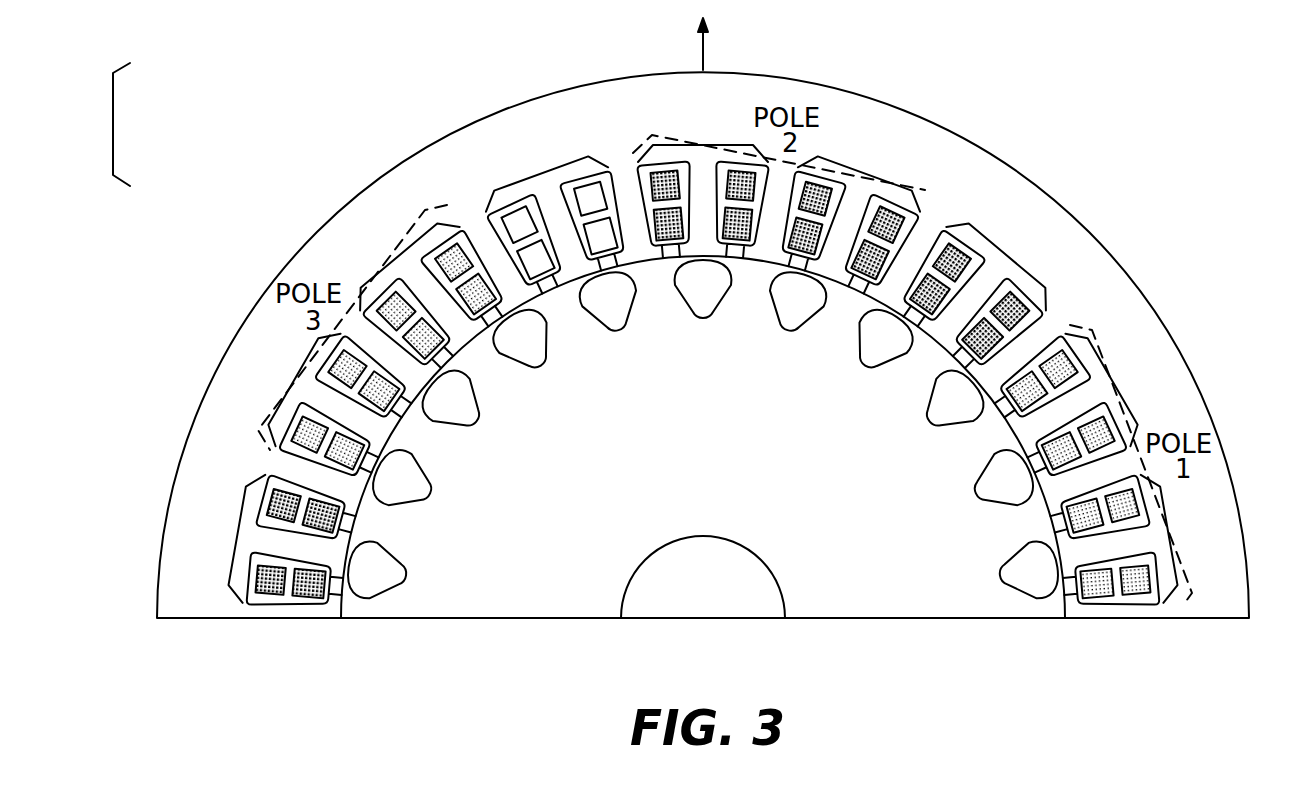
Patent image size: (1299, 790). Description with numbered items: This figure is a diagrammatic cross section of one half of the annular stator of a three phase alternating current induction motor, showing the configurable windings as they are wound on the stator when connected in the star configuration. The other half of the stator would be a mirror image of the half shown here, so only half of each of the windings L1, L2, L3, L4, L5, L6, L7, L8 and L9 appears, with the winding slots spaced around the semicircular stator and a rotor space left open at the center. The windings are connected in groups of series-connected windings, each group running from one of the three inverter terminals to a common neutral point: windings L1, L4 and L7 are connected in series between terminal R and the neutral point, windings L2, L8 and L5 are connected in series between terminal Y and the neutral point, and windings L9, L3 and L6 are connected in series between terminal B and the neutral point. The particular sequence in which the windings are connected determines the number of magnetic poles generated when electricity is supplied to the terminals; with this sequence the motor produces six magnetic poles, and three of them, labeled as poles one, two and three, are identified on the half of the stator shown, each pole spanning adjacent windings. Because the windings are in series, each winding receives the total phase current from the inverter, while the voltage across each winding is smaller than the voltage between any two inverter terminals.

The winding L1 is at (1170, 542).
The winding L2 is at (1115, 383).
The winding L3 is at (1008, 255).
The winding L4 is at (866, 172).
The winding L5 is at (708, 145).
The winding L6 is at (541, 170).
The winding L7 is at (403, 247).
The winding L8 is at (297, 378).
The winding L9 is at (235, 536).